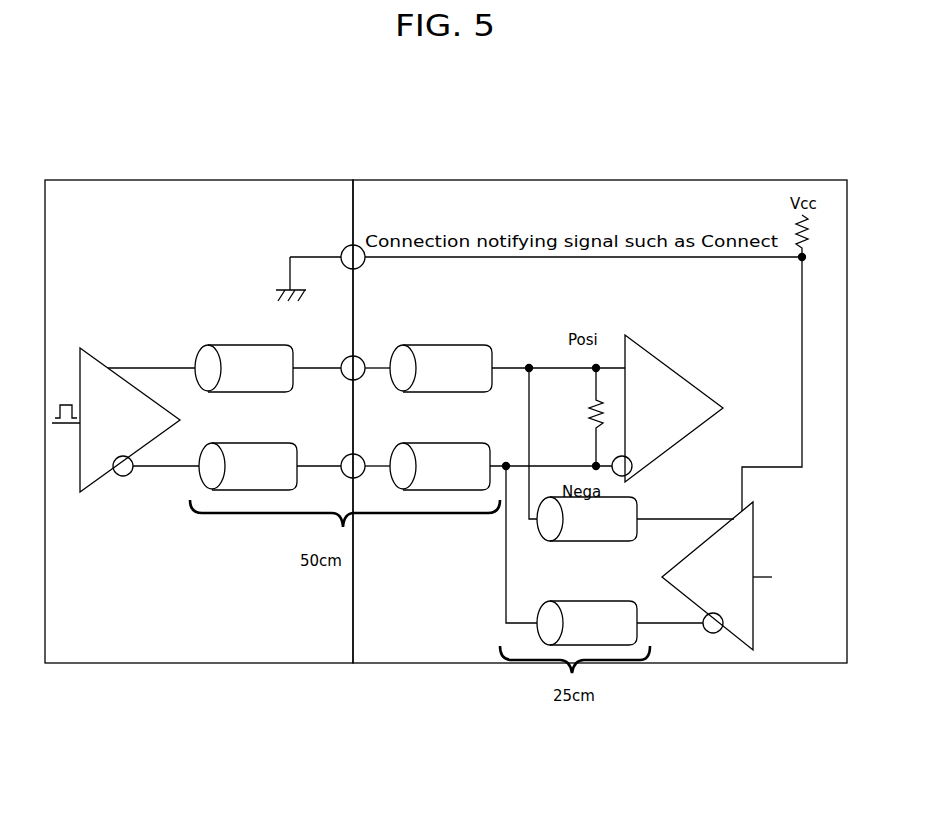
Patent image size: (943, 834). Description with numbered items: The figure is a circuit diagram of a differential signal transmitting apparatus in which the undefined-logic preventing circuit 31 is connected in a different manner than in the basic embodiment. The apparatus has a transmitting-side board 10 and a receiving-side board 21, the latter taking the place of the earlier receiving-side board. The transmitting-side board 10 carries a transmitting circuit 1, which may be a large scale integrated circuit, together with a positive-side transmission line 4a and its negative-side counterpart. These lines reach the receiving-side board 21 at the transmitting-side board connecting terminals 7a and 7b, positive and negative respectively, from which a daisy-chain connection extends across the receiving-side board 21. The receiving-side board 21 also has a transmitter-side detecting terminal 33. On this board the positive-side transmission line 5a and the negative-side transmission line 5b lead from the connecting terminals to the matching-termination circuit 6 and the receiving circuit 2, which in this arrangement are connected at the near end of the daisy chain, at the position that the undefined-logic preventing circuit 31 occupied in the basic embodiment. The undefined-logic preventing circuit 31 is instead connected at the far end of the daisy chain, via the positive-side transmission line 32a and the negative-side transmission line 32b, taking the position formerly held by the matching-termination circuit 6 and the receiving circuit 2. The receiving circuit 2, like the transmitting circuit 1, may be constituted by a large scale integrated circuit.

The transmitting-side board 10 is at (54, 180).
The receiving-side board 21 is at (366, 180).
The transmitter-side detecting terminal 33 is at (340, 250).
The transmitting circuit 1 is at (80, 492).
The transmission line (positive side) 4a is at (208, 345).
The transmitting-side board connecting terminal (positive side) 7a is at (340, 376).
The transmitting-side board connecting terminal (negative side) 7b is at (343, 477).
The transmission line (positive side) 5a is at (410, 346).
The transmission line (negative side) 5b is at (407, 492).
The matching-termination circuit 6 is at (596, 398).
The receiving circuit 2 is at (644, 352).
The transmission line (positive side) 32a is at (540, 530).
The transmission line (negative side) 32b is at (540, 636).
The undefined-logic preventing circuit 31 is at (755, 512).